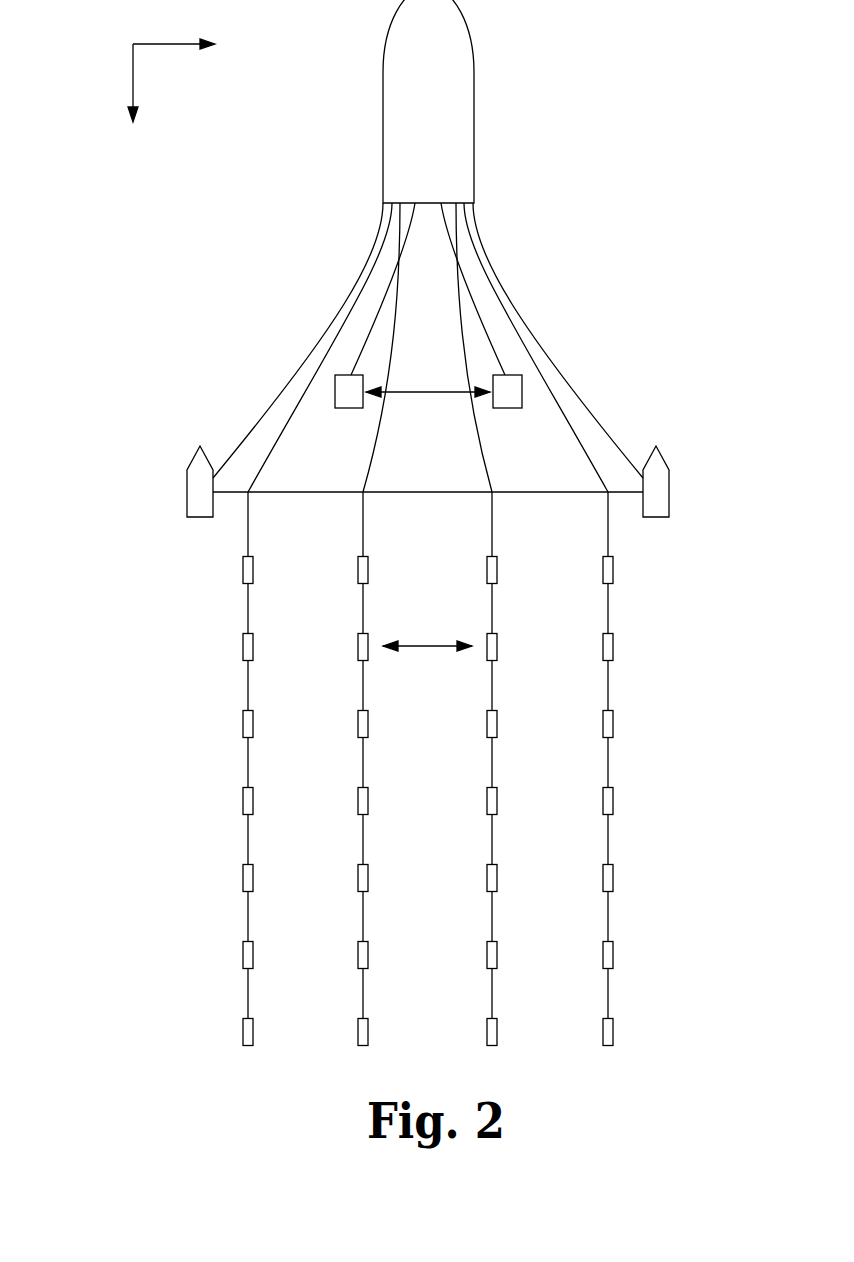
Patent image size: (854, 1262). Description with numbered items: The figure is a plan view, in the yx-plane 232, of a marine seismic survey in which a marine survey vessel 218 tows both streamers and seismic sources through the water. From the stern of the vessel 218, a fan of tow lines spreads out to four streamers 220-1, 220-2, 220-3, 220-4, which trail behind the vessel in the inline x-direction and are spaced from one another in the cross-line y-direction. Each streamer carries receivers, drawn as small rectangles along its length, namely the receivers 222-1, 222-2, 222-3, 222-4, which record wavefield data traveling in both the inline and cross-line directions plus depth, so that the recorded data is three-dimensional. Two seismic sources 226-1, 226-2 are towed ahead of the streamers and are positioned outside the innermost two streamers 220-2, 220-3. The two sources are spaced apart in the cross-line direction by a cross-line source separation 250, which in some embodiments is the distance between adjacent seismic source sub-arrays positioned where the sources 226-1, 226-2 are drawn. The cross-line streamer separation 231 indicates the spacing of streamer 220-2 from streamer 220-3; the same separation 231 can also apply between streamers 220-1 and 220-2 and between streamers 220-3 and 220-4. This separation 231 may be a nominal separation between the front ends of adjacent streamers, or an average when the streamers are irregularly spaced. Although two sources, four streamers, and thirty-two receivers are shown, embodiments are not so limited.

The marine survey vessel 218 is at (474, 89).
The yx-plane 232 is at (133, 44).
The streamer 220-1 is at (248, 527).
The streamer 220-2 is at (363, 527).
The streamer 220-3 is at (492, 527).
The streamer 220-4 is at (608, 527).
The receivers 222-1 is at (253, 570).
The receivers 222-2 is at (368, 570).
The receivers 222-3 is at (497, 570).
The receivers 222-4 is at (613, 570).
The seismic source 226-1 is at (346, 409).
The seismic source 226-2 is at (510, 409).
The cross-line source separation 250 is at (430, 396).
The cross-line streamer separation 231 is at (425, 650).